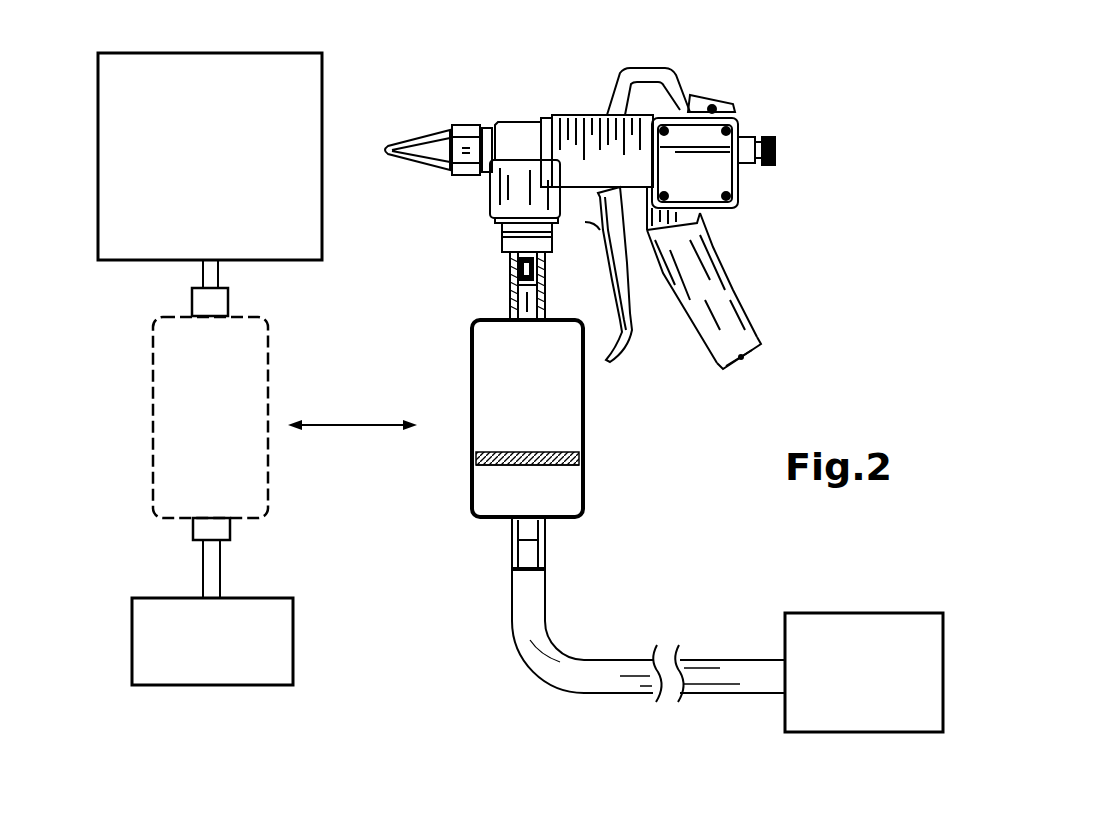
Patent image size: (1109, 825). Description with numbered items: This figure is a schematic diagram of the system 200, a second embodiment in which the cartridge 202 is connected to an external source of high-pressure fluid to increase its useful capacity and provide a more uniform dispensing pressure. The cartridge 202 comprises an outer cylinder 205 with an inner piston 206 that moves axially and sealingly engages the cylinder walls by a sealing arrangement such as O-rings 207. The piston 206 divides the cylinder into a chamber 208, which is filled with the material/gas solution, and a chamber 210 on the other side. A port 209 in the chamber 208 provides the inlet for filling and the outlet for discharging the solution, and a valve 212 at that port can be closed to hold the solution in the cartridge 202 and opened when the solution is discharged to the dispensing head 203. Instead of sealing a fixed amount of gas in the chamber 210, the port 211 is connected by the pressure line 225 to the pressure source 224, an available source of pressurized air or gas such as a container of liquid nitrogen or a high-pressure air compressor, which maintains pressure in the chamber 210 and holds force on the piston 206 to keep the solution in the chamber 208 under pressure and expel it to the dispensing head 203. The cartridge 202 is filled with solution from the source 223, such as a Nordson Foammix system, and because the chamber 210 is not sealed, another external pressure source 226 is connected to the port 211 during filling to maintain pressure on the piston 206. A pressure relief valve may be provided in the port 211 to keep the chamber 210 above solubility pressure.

The system 200 is at (706, 391).
The cartridge 202 is at (153, 462).
The dispensing head 203 is at (547, 115).
The outer cylinder 205 is at (587, 410).
The piston 206 is at (557, 464).
The O-rings 207 is at (476, 456).
The chamber 208 is at (502, 385).
The port 209 is at (510, 315).
The chamber 210 is at (500, 487).
The port 211 is at (513, 533).
The valve 212 is at (510, 272).
The source of solution 223 is at (307, 135).
The pressure source 224 is at (872, 632).
The pressure line 225 is at (553, 670).
The external pressure source 226 is at (280, 661).